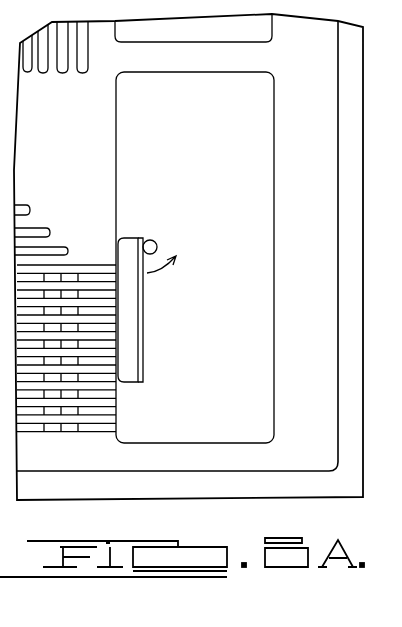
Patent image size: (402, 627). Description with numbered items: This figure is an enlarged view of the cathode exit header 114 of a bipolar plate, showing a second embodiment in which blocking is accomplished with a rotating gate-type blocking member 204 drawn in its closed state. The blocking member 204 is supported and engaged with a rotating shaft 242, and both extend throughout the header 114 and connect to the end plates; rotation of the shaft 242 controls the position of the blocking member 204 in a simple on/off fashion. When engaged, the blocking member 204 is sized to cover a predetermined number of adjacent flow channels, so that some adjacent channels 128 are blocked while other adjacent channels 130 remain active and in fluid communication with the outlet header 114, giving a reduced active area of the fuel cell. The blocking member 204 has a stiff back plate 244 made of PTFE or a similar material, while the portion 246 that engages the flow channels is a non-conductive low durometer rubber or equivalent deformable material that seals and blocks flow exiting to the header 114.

The header 114 is at (223, 120).
The blocked adjacent channels 128 is at (105, 368).
The active adjacent channels 130 is at (112, 388).
The gate-type blocking member 204 is at (222, 278).
The rotating shaft 242 is at (156, 242).
The back plate 244 is at (145, 361).
The channel-engaging portion 246 is at (127, 339).